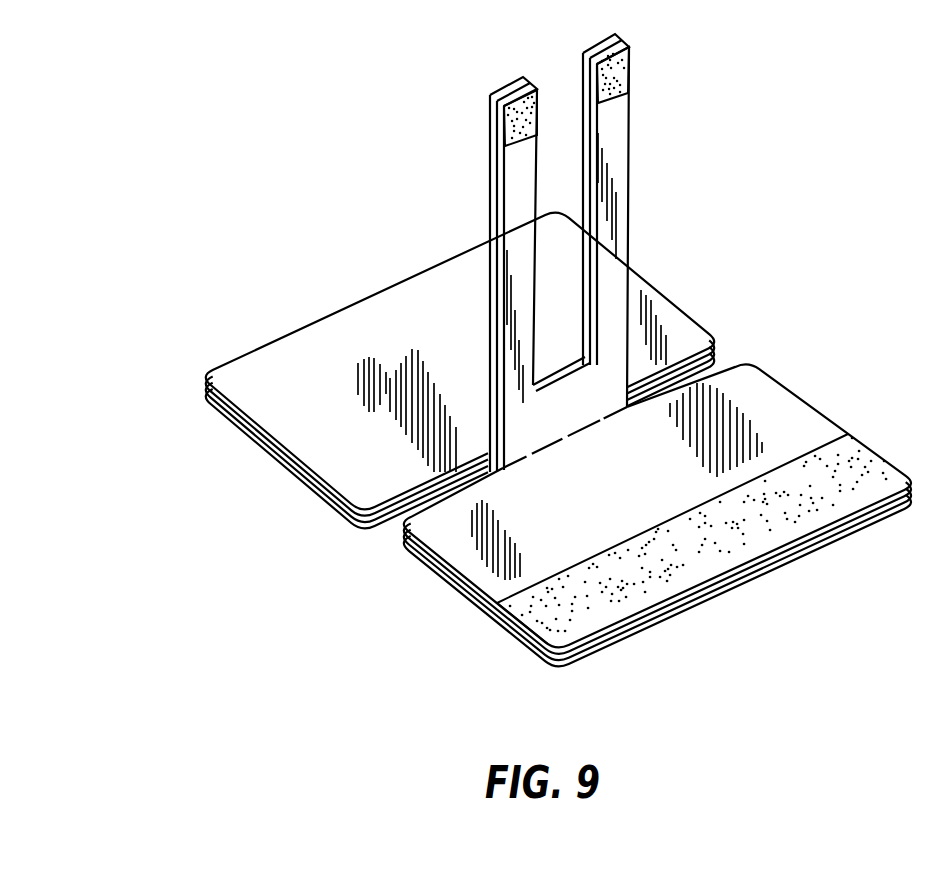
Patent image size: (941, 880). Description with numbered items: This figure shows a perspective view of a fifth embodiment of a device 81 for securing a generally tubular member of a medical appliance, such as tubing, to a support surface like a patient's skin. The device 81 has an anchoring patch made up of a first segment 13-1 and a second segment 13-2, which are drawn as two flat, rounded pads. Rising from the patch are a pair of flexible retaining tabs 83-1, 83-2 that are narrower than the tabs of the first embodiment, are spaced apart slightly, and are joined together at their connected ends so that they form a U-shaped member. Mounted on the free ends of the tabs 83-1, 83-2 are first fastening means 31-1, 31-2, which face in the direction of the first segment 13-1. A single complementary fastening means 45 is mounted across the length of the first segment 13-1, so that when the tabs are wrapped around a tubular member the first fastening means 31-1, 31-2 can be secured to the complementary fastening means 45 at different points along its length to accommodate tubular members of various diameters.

The device 81 is at (300, 183).
The first segment 13-1 is at (786, 385).
The second segment 13-2 is at (697, 320).
The flexible retaining tab 83-1 is at (490, 297).
The flexible retaining tab 83-2 is at (629, 187).
The first fastening means 31-1 is at (519, 125).
The first fastening means 31-2 is at (612, 84).
The complementary fastening means 45 is at (611, 565).